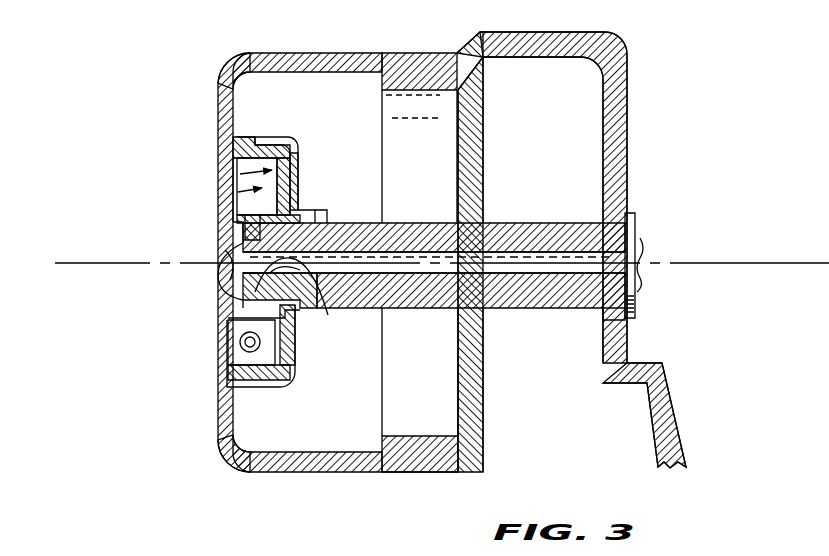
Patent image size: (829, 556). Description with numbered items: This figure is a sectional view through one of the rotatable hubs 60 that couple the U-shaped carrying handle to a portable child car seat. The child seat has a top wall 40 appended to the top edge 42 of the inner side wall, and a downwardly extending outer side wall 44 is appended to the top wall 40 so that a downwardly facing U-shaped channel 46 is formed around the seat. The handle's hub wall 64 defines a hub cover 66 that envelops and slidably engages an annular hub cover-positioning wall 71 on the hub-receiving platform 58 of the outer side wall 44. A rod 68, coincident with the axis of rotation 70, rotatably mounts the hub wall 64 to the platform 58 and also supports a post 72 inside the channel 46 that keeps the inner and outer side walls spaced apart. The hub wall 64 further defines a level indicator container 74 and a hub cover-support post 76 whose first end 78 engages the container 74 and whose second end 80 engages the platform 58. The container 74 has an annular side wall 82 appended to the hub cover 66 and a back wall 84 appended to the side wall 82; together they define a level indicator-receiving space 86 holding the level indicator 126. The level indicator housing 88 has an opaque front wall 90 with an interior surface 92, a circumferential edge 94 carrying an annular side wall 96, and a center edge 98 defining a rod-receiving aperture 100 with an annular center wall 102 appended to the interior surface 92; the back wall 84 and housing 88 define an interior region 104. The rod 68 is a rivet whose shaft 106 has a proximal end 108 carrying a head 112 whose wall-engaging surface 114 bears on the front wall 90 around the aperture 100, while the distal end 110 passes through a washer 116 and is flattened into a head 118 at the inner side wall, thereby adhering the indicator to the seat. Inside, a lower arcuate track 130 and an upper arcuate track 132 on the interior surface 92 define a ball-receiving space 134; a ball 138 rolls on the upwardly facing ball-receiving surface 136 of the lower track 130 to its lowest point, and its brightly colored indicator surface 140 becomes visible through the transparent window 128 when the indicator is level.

The top wall 40 is at (542, 236).
The top edge 42 is at (627, 52).
The outer side wall 44 is at (476, 130).
The U-shaped channel 46 is at (553, 370).
The hub-receiving platform 58 is at (475, 403).
The hub 60 is at (308, 265).
The hub wall 64 is at (405, 478).
The hub cover 66 is at (316, 462).
The rod 68 is at (587, 257).
The axis of rotation 70 is at (745, 262).
The hub cover-positioning wall 71 is at (443, 77).
The post 72 is at (548, 298).
The level indicator container 74 is at (248, 187).
The hub cover-support post 76 is at (440, 300).
The first end 78 is at (440, 181).
The second end 80 is at (404, 162).
The annular side wall 82 is at (252, 137).
The back wall 84 is at (303, 157).
The level indicator-receiving space 86 is at (240, 192).
The level indicator housing 88 is at (213, 168).
The front wall 90 is at (213, 218).
The interior surface 92 is at (308, 195).
The circumferential edge 94 is at (218, 170).
The annular side wall 96 is at (272, 148).
The center edge 98 is at (230, 247).
The rod-receiving aperture 100 is at (310, 265).
The annular center wall 102 is at (290, 218).
The interior region 104 is at (300, 322).
The shaft 106 is at (528, 257).
The proximal end 108 is at (213, 255).
The distal end 110 is at (617, 262).
The head 112 is at (213, 267).
The wall-engaging surface 114 is at (302, 210).
The washer 116 is at (635, 217).
The head 118 is at (645, 282).
The level indicator 126 is at (192, 172).
The transparent window 128 is at (217, 345).
The lower arcuate track 130 is at (263, 397).
The upper arcuate track 132 is at (217, 302).
The ball-receiving space 134 is at (300, 357).
The ball-receiving surface 136 is at (303, 377).
The ball 138 is at (217, 348).
The indicator surface 140 is at (213, 333).